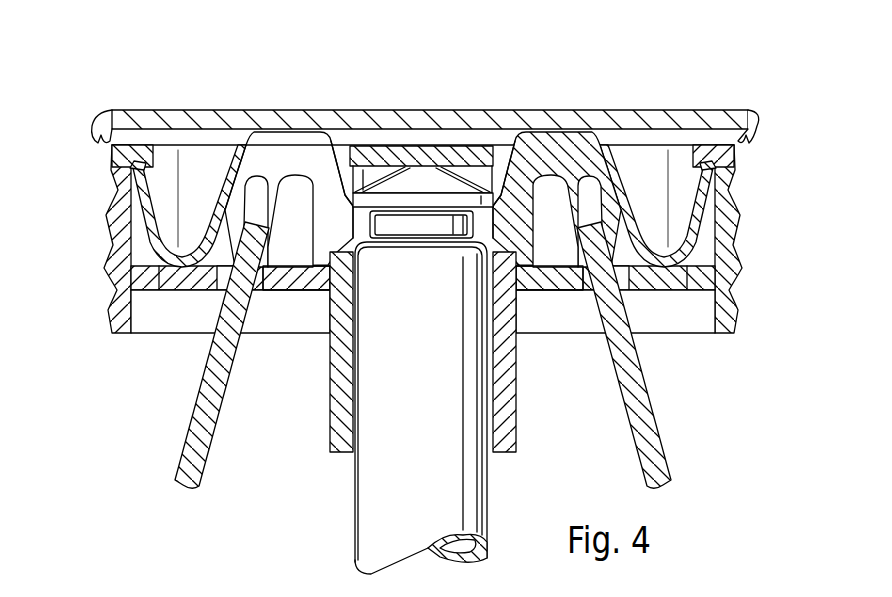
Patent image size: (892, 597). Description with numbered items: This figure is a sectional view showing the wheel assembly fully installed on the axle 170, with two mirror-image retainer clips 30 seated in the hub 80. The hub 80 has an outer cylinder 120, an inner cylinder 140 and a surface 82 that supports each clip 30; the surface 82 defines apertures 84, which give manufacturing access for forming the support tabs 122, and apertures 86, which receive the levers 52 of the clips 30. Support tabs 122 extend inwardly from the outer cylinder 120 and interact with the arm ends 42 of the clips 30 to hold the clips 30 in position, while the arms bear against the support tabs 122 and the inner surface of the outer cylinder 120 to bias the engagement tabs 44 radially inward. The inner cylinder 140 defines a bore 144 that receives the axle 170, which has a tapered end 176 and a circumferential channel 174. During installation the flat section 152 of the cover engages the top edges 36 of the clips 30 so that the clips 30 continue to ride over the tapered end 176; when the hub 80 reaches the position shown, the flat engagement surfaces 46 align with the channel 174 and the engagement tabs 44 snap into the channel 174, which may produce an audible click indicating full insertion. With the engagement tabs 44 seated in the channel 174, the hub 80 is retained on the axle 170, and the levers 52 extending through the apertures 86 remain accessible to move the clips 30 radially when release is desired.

The retainer clip 30 is at (228, 152).
The top edge 36 is at (294, 132).
The arm end 42 is at (131, 170).
The engagement tab 44 is at (341, 198).
The flat engagement surface 46 is at (346, 205).
The lever 52 is at (168, 427).
The hub 80 is at (737, 275).
The surface 82 is at (286, 263).
The aperture 84 is at (147, 281).
The aperture 86 is at (230, 271).
The outer cylinder 120 is at (123, 225).
The support tab 122 is at (148, 110).
The inner cylinder 140 is at (332, 395).
The bore 144 is at (363, 176).
The flat section 152 is at (472, 110).
The axle 170 is at (348, 508).
The channel 174 is at (440, 222).
The tapered end 176 is at (412, 176).